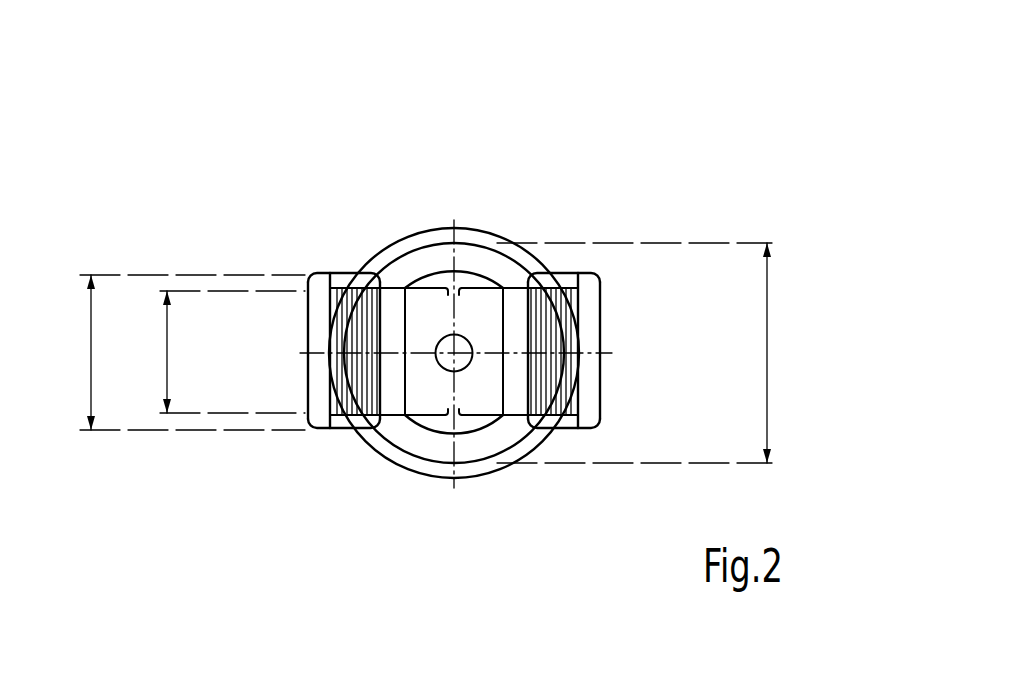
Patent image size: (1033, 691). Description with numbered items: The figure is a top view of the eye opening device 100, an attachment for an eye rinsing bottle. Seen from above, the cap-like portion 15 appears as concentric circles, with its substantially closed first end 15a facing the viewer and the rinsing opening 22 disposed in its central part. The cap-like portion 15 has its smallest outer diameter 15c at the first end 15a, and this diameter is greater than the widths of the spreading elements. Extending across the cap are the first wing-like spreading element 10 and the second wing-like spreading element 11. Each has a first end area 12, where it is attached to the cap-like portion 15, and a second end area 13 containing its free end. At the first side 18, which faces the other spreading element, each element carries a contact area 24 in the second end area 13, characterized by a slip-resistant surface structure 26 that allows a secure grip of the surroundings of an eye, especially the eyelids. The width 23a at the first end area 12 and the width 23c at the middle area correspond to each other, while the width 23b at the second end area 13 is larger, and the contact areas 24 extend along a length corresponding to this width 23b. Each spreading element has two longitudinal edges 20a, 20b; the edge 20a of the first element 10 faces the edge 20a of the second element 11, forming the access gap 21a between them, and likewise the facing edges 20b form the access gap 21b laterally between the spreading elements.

The eye opening device 100 is at (597, 95).
The first wing-like spreading element 10 is at (288, 372).
The second wing-like spreading element 11 is at (660, 315).
The first end area 12 is at (422, 323).
The second end area 13 is at (318, 305).
The cap-like portion 15 is at (482, 445).
The first end 15a is at (435, 448).
The smallest outer diameter 15c is at (768, 353).
The first side 18 is at (397, 323).
The longitudinal edge 20a is at (335, 272).
The longitudinal edge 20b is at (328, 430).
The access gap 21a is at (463, 289).
The access gap 21b is at (448, 358).
The rinsing opening 22 is at (445, 407).
The width 23a is at (167, 325).
The width 23b is at (91, 330).
The width 23c is at (167, 367).
The contact area 24 is at (357, 343).
The slip-resistant surface structure 26 is at (567, 382).